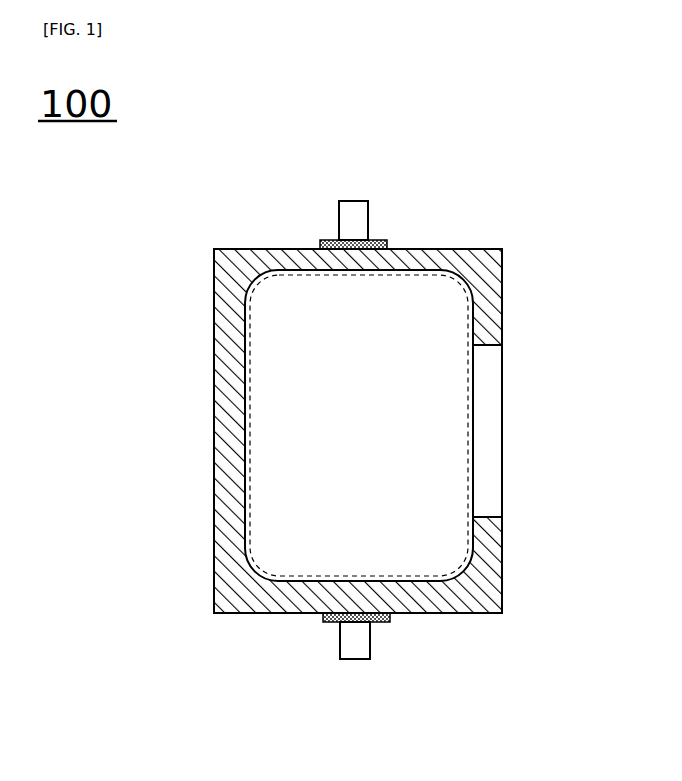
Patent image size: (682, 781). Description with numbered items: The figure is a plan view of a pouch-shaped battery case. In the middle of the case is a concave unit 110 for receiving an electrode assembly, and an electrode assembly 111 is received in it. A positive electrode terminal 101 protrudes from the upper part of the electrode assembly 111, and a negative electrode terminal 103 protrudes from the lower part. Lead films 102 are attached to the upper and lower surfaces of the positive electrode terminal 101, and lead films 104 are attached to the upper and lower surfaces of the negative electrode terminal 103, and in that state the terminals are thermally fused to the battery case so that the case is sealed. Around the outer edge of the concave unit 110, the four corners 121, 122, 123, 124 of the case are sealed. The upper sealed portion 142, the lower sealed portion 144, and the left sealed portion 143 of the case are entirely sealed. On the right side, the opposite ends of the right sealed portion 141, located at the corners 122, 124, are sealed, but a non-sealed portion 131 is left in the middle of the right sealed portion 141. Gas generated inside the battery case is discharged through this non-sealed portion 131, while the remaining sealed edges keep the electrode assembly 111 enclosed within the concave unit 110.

The positive electrode terminal 101 is at (353, 211).
The lead films 102 is at (387, 239).
The negative electrode terminal 103 is at (372, 650).
The lead films 104 is at (325, 622).
The concave unit 110 is at (483, 530).
The electrode assembly 111 is at (458, 475).
The corner 121 is at (200, 237).
The corner 122 is at (518, 237).
The corner 123 is at (198, 618).
The corner 124 is at (518, 625).
The non-sealed portion 131 is at (490, 427).
The right sealed portion 141 is at (502, 323).
The upper sealed portion 142 is at (300, 249).
The left sealed portion 143 is at (214, 383).
The lower sealed portion 144 is at (430, 613).